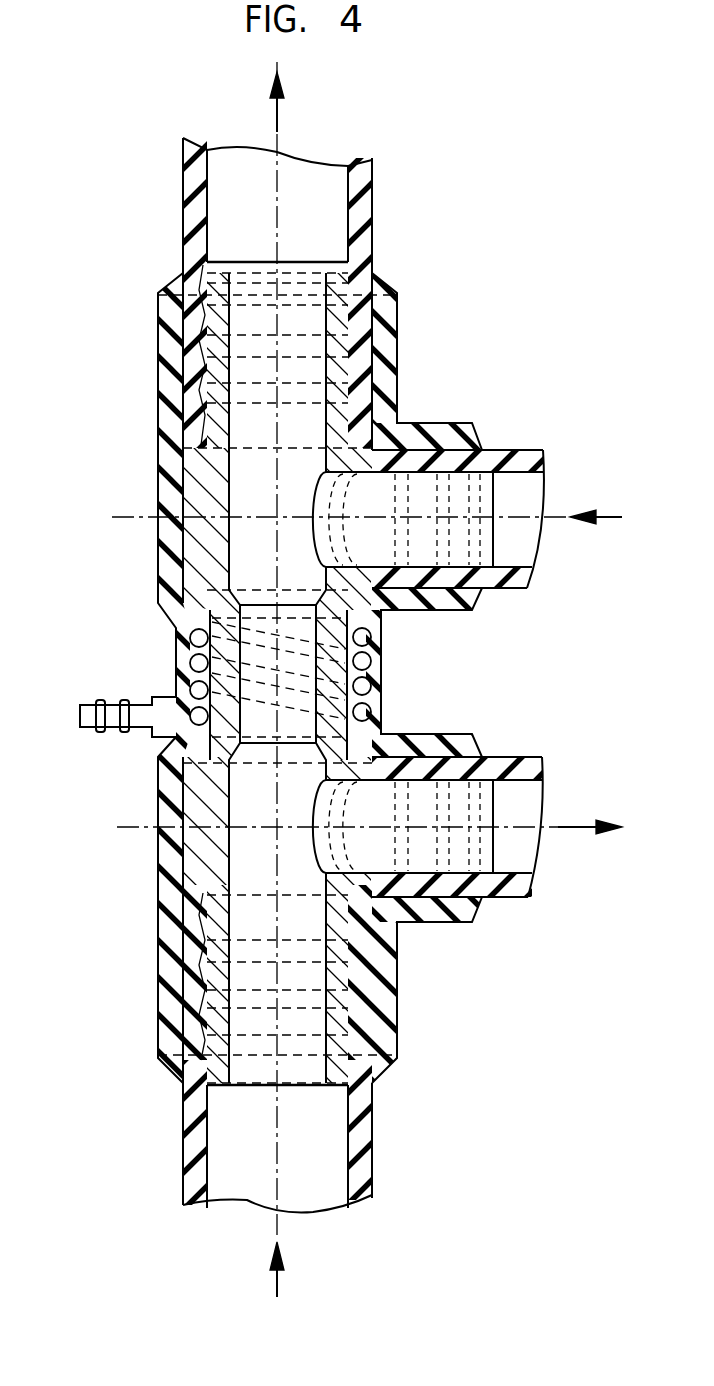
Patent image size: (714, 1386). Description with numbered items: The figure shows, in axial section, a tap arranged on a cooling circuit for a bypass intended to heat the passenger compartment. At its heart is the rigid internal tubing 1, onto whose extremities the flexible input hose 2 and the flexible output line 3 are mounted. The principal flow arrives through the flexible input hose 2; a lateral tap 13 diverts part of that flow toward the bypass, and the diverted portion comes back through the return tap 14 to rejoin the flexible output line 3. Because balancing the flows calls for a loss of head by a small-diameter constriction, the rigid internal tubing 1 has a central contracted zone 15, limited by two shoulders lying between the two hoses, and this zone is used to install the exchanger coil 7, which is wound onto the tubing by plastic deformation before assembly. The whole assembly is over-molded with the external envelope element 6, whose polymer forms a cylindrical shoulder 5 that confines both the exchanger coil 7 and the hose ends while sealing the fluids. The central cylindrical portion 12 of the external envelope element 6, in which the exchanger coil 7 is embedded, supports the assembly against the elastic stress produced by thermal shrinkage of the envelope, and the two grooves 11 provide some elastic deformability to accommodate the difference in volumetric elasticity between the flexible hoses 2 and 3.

The rigid internal tubing 1 is at (195, 541).
The flexible input hose 2 is at (228, 1158).
The flexible output line 3 is at (220, 218).
The cylindrical shoulder 5 is at (191, 462).
The external envelope element 6 is at (172, 1000).
The exchanger coil 7 is at (387, 688).
The grooves 11 is at (396, 625).
The central cylindrical portion 12 is at (46, 618).
The lateral tap 13 is at (513, 880).
The return tap 14 is at (497, 452).
The central contracted zone 15 is at (383, 658).